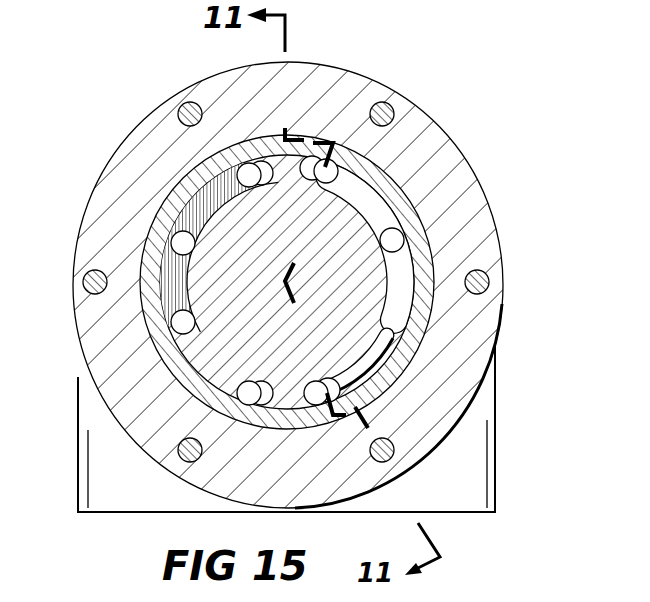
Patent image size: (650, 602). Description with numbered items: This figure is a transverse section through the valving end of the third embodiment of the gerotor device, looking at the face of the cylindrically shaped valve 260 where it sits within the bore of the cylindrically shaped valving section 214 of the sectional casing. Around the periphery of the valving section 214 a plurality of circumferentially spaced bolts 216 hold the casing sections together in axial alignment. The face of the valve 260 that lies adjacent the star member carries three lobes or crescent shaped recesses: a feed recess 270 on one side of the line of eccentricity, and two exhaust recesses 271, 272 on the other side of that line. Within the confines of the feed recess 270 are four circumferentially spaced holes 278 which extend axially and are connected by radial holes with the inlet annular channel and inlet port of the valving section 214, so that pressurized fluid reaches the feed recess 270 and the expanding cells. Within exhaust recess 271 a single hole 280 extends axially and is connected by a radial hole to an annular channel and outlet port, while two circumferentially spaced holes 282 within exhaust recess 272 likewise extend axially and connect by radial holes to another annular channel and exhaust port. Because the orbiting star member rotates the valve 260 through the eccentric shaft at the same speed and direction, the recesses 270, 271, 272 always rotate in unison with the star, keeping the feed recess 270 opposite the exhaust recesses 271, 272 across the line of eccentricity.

The valving section 214 is at (155, 117).
The bolts 216 is at (394, 107).
The valve 260 is at (406, 336).
The feed recess 270 is at (168, 303).
The exhaust recess 271 is at (373, 352).
The exhaust recess 272 is at (371, 219).
The axially extending holes 278 is at (243, 186).
The axially extending hole 280 is at (325, 408).
The axially extending holes 282 is at (331, 179).